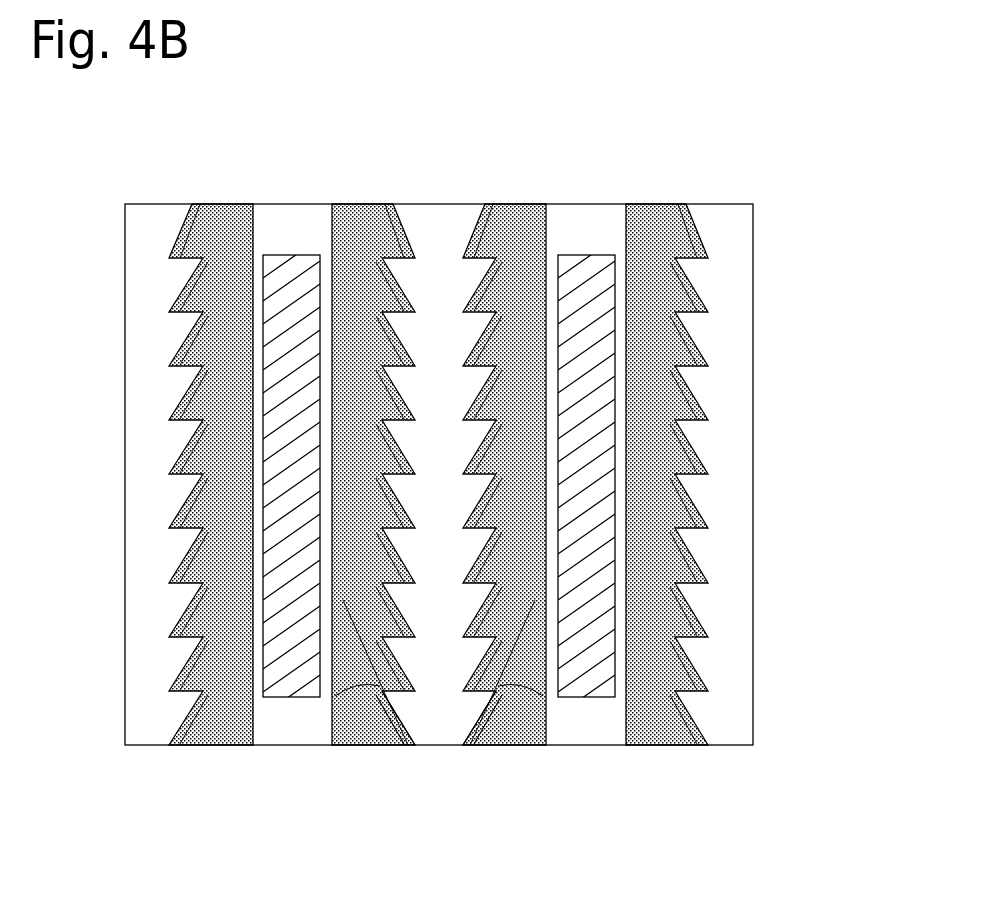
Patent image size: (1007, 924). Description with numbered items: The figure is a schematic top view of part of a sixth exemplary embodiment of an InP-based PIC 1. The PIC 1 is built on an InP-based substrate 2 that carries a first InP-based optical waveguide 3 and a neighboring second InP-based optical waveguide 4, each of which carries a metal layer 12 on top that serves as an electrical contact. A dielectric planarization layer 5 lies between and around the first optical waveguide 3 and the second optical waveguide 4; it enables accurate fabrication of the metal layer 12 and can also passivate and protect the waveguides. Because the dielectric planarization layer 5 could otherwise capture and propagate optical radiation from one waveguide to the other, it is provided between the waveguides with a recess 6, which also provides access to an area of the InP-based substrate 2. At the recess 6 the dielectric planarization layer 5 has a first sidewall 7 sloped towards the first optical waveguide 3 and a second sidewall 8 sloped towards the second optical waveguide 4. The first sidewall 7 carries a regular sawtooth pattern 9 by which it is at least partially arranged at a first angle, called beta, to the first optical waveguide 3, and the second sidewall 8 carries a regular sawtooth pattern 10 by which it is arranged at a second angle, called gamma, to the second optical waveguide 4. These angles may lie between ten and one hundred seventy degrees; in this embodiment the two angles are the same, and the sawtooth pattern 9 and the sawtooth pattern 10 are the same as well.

The InP-based PIC 1 is at (684, 146).
The InP-based substrate 2 is at (725, 360).
The first InP-based optical waveguide 3 is at (269, 200).
The second InP-based optical waveguide 4 is at (586, 200).
The dielectric planarization layer 5 is at (213, 262).
The recess 6 is at (438, 200).
The first sidewall 7 is at (400, 228).
The second sidewall 8 is at (476, 228).
The sawtooth pattern 9 is at (413, 704).
The sawtooth pattern 10 is at (462, 704).
The metal layer 12 is at (303, 265).